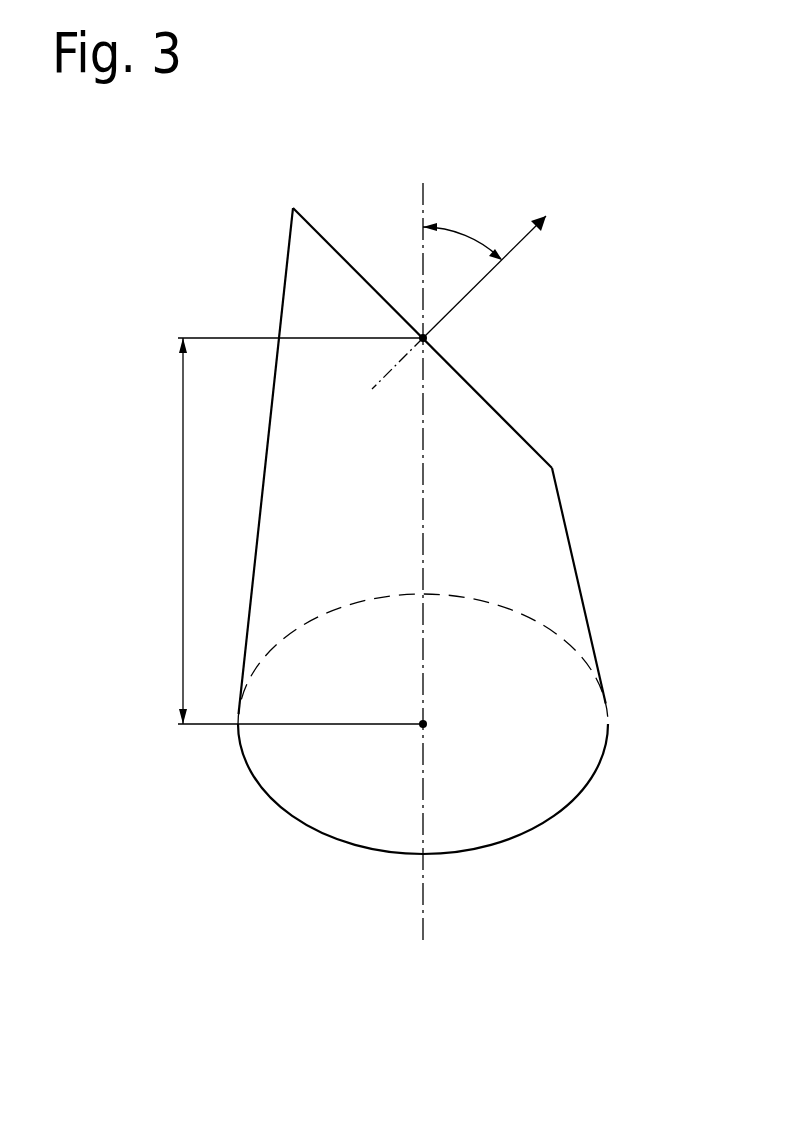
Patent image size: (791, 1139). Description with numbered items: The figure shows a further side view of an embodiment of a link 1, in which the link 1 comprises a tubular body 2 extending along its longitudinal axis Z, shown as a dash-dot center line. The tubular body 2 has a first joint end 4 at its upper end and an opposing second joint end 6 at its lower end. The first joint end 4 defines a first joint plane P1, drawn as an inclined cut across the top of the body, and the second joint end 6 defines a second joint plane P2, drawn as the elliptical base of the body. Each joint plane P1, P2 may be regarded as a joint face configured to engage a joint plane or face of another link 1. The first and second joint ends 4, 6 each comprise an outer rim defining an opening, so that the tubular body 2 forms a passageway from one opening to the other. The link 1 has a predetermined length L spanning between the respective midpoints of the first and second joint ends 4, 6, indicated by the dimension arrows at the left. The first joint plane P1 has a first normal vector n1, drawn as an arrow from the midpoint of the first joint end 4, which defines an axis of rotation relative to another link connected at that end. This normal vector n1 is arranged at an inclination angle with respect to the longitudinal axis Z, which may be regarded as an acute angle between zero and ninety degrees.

The link 1 is at (641, 345).
The tubular body 2 is at (568, 528).
The first joint end 4 is at (532, 447).
The second joint end 6 is at (560, 810).
The first joint plane P1 is at (467, 378).
The second joint plane P2 is at (566, 757).
The longitudinal axis Z is at (423, 193).
The first normal vector n1 is at (502, 277).
The length L is at (300, 531).